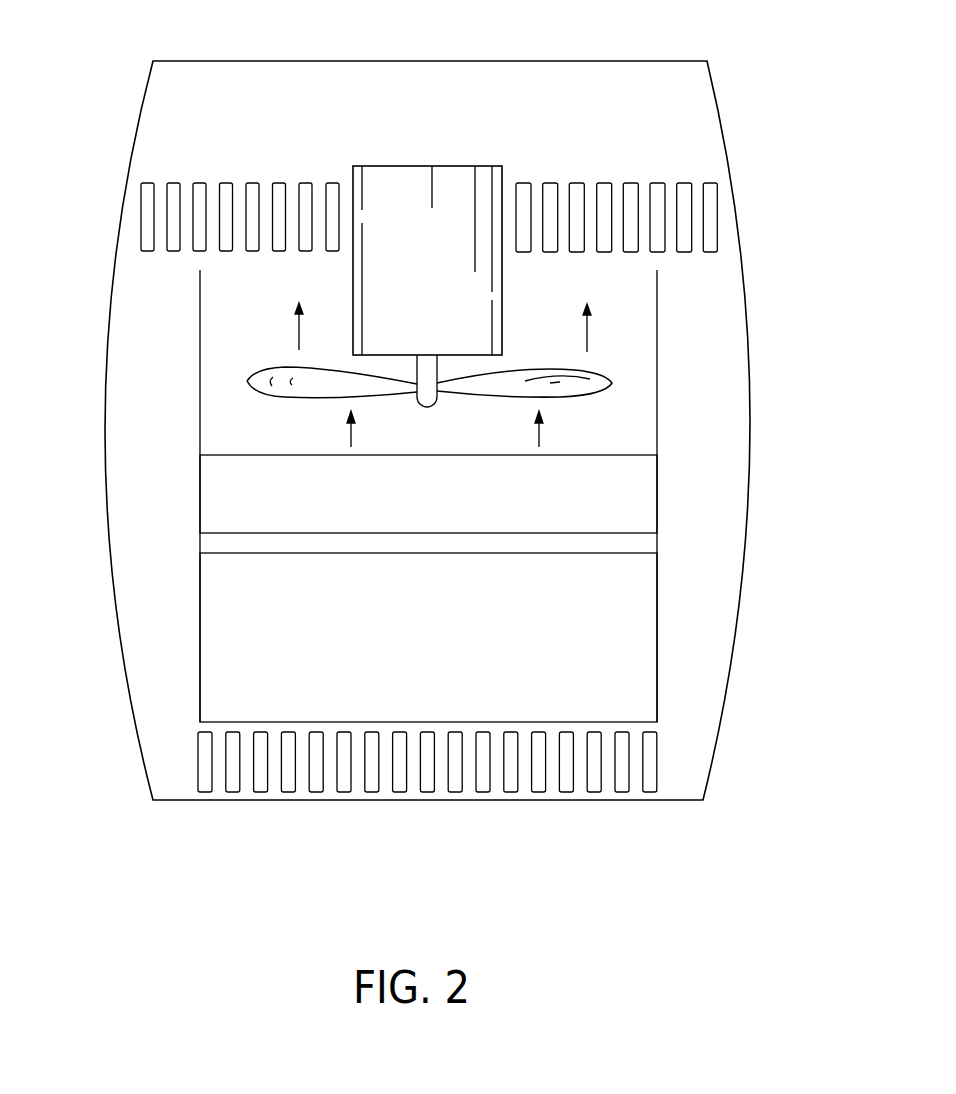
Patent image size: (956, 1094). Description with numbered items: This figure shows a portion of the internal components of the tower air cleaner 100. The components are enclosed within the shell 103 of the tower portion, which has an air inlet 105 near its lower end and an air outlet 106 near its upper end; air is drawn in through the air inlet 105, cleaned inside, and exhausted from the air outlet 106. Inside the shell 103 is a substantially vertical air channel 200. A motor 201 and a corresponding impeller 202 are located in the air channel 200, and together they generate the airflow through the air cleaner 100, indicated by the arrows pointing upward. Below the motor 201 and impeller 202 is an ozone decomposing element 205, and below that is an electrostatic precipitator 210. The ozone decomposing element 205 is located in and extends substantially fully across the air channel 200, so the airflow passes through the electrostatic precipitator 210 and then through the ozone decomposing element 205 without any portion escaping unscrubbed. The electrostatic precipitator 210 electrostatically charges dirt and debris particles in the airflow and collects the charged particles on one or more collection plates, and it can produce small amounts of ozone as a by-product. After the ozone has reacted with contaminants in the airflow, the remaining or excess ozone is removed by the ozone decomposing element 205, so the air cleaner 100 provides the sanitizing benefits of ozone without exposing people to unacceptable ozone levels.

The air cleaner 100 is at (233, 827).
The shell 103 is at (116, 266).
The air inlet 105 is at (733, 728).
The air outlet 106 is at (747, 185).
The air channel 200 is at (657, 334).
The motor 201 is at (392, 165).
The impeller 202 is at (247, 381).
The ozone decomposing element 205 is at (443, 517).
The electrostatic precipitator 210 is at (443, 658).